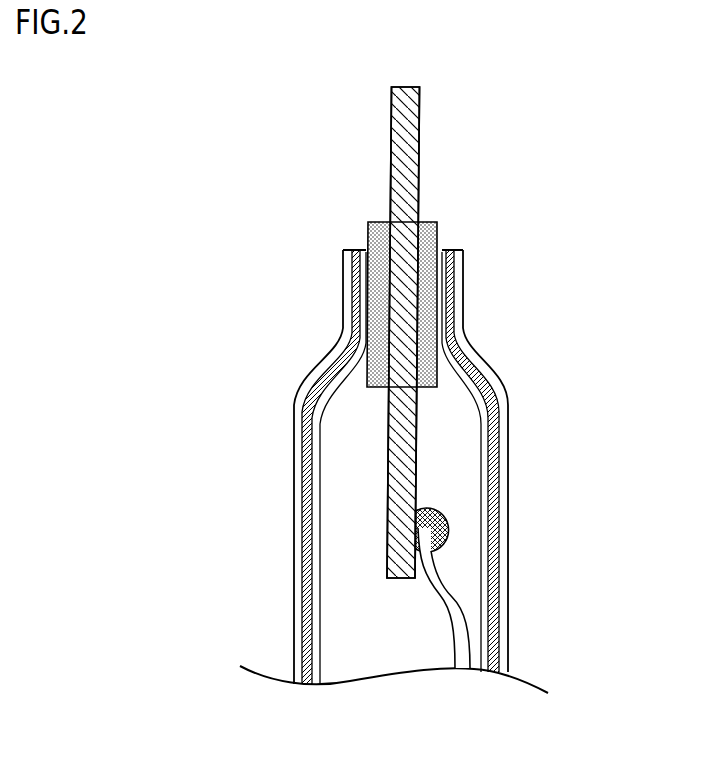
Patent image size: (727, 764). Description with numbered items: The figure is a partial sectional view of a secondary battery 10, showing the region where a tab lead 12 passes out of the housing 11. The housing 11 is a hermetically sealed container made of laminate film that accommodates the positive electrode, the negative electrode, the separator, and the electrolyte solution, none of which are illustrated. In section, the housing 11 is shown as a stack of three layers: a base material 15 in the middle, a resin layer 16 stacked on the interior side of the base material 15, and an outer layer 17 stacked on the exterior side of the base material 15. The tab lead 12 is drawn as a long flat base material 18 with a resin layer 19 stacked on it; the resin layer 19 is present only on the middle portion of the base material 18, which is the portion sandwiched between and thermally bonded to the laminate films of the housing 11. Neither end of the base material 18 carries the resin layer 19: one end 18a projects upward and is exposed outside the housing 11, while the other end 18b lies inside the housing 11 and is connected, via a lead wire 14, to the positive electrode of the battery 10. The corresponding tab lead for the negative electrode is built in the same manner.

The secondary battery 10 is at (259, 104).
The housing 11 is at (525, 422).
The tab lead 12 is at (371, 203).
The lead wire 14 is at (460, 632).
The base material 15 is at (492, 672).
The resin layer 16 is at (485, 669).
The outer layer 17 is at (506, 672).
The base material 18 is at (419, 160).
The one end 18a is at (391, 147).
The other end 18b is at (387, 467).
The resin layer 19 is at (433, 223).